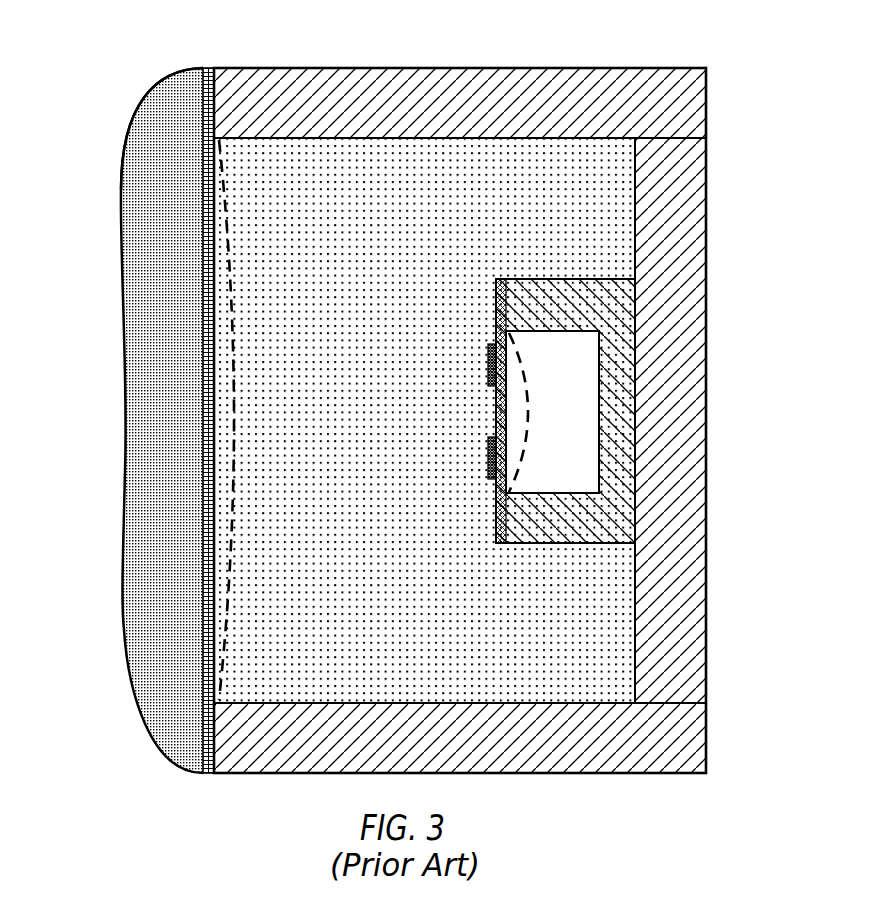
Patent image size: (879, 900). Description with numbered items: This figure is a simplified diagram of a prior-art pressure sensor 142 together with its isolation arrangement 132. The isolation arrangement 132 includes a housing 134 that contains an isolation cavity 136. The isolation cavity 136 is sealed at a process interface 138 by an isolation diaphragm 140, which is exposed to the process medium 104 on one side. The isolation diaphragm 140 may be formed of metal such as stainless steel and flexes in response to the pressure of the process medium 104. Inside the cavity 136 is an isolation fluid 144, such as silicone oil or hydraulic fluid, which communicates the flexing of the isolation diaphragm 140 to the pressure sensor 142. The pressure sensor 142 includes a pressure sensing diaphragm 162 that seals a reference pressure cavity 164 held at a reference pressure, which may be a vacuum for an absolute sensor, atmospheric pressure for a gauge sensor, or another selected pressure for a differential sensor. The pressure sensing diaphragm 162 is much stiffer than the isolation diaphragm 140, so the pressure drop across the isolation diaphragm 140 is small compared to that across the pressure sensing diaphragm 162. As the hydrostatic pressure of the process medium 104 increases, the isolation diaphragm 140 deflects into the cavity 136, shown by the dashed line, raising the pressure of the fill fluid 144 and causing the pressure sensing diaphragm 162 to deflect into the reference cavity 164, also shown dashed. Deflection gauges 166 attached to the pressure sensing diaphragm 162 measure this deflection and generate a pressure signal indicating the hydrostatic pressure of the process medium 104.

The process medium 104 is at (131, 160).
The isolation arrangement 132 is at (186, 112).
The housing 134 is at (255, 774).
The isolation cavity 136 is at (330, 168).
The process interface 138 is at (165, 268).
The isolation diaphragm 140 is at (206, 406).
The pressure sensor 142 is at (563, 250).
The isolation fluid 144 is at (567, 683).
The pressure sensing diaphragm 162 is at (498, 404).
The reference pressure cavity 164 is at (562, 480).
The deflection gauges 166 is at (487, 364).